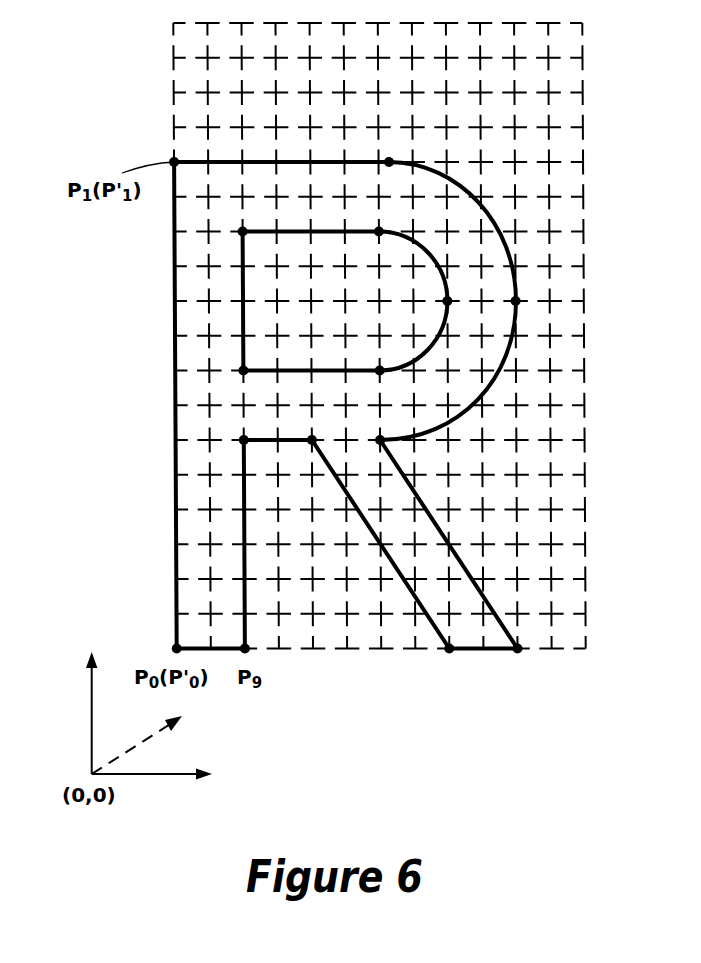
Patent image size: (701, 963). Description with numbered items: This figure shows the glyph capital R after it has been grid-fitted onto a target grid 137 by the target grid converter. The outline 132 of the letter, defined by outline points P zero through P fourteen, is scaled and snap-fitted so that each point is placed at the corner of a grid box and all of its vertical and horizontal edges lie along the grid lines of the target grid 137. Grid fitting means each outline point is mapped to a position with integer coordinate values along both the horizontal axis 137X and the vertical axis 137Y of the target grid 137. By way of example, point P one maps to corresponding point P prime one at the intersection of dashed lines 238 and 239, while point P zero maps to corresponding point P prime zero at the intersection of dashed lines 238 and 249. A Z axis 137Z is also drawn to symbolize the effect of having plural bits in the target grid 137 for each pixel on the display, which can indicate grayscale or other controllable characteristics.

The target grid 137 is at (583, 31).
The dashed line 238 is at (173, 112).
The dashed line 239 is at (583, 161).
The dashed line 249 is at (585, 645).
The outline 132 is at (173, 273).
The horizontal axis 137X is at (118, 776).
The vertical axis 137Y is at (90, 680).
The Z axis 137Z is at (147, 738).